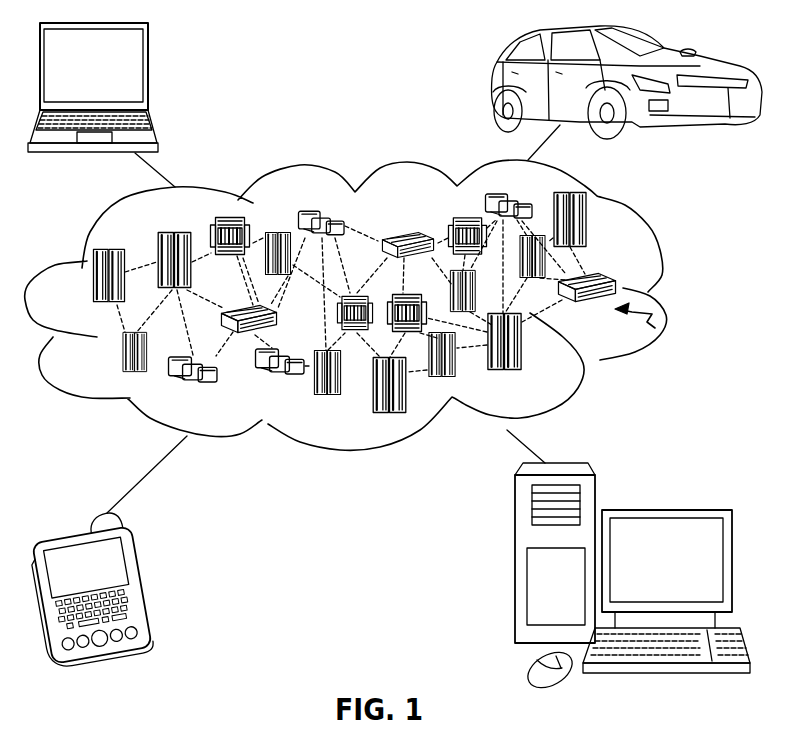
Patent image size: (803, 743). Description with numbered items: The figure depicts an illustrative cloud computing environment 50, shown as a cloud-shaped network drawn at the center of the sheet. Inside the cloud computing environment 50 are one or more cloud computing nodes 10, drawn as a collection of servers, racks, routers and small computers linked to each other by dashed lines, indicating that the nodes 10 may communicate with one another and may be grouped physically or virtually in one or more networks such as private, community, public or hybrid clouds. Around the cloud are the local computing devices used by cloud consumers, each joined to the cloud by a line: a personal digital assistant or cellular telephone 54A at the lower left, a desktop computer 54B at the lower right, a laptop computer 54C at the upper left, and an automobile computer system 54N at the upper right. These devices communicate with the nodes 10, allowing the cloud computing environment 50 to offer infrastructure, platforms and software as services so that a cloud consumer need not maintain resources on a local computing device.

The cloud computing nodes 10 is at (657, 323).
The cloud computing environment 50 is at (367, 305).
The personal digital assistant (PDA) or cellular telephone 54A is at (112, 552).
The desktop computer 54B is at (628, 562).
The laptop computer 54C is at (117, 105).
The automobile computer system 54N is at (597, 93).